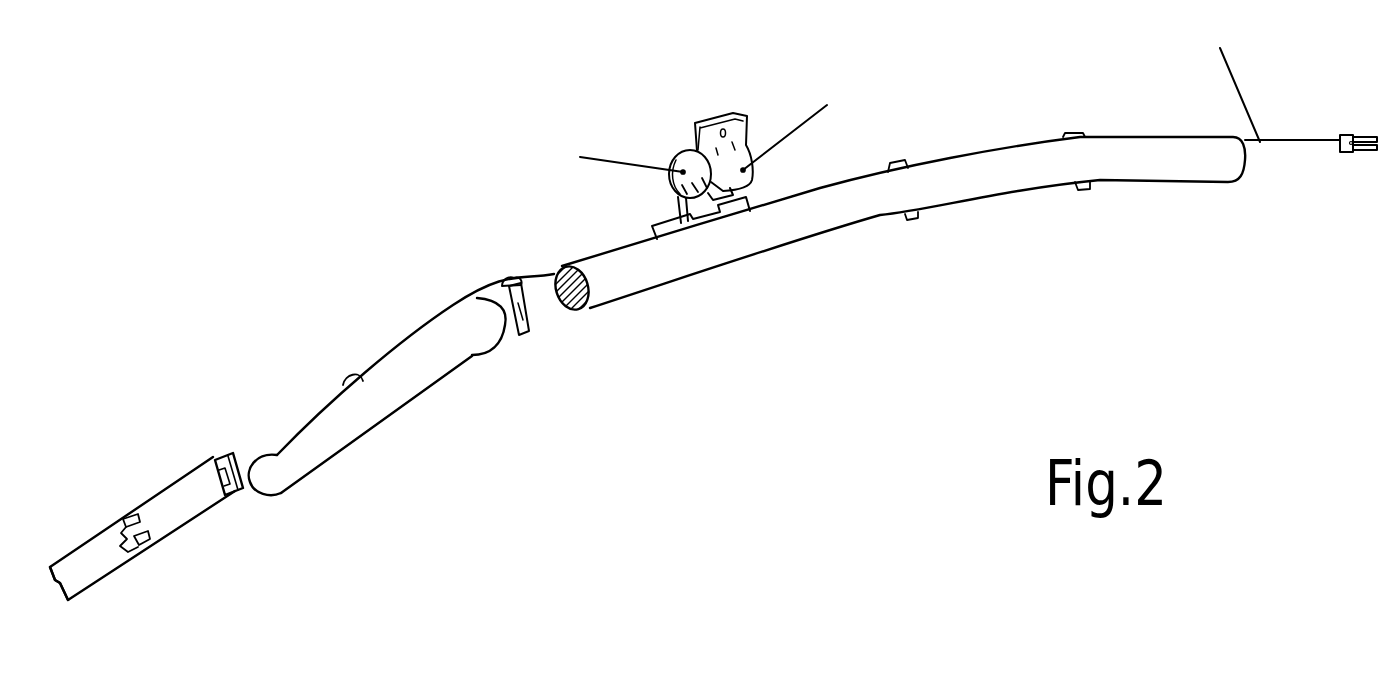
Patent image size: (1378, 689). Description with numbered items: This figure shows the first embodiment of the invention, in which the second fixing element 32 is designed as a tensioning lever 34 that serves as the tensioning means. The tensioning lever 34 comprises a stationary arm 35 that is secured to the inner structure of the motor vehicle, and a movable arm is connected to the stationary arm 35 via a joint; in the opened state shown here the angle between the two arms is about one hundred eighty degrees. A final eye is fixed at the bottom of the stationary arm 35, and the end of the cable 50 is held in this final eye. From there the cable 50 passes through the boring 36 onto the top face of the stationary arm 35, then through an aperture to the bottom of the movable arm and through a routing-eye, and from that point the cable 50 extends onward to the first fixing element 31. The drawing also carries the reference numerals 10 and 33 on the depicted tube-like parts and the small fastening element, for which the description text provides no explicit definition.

The tube 10 is at (440, 373).
The first fixing element 31 is at (1350, 150).
The second fixing element 32 is at (188, 507).
The cable tie 33 is at (528, 335).
The tensioning lever 34 is at (118, 533).
The stationary arm 35 is at (75, 563).
The boring 36 is at (110, 548).
The cable 50 is at (483, 295).